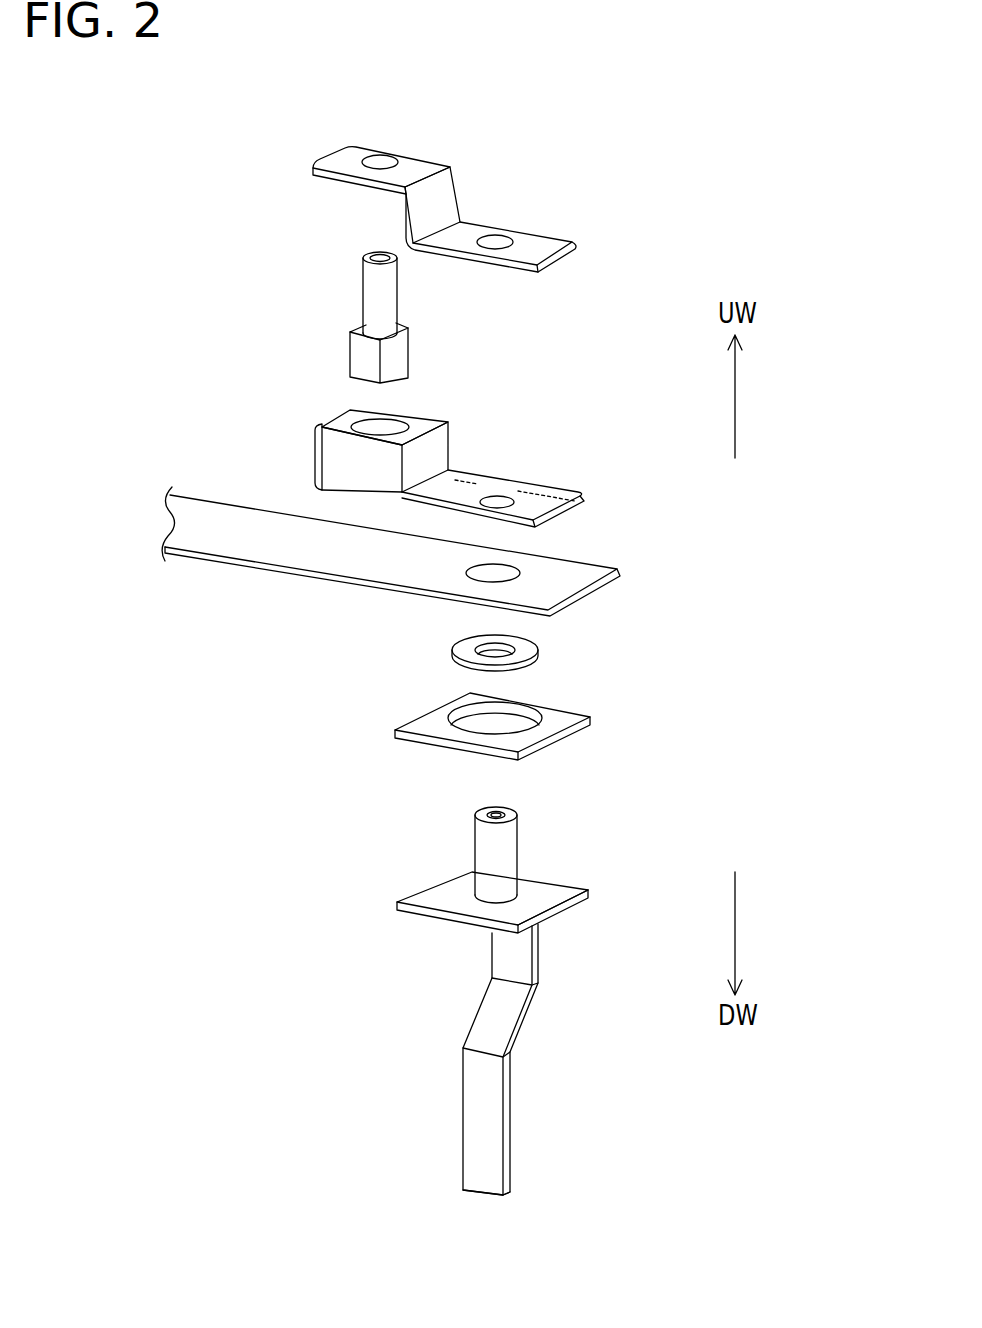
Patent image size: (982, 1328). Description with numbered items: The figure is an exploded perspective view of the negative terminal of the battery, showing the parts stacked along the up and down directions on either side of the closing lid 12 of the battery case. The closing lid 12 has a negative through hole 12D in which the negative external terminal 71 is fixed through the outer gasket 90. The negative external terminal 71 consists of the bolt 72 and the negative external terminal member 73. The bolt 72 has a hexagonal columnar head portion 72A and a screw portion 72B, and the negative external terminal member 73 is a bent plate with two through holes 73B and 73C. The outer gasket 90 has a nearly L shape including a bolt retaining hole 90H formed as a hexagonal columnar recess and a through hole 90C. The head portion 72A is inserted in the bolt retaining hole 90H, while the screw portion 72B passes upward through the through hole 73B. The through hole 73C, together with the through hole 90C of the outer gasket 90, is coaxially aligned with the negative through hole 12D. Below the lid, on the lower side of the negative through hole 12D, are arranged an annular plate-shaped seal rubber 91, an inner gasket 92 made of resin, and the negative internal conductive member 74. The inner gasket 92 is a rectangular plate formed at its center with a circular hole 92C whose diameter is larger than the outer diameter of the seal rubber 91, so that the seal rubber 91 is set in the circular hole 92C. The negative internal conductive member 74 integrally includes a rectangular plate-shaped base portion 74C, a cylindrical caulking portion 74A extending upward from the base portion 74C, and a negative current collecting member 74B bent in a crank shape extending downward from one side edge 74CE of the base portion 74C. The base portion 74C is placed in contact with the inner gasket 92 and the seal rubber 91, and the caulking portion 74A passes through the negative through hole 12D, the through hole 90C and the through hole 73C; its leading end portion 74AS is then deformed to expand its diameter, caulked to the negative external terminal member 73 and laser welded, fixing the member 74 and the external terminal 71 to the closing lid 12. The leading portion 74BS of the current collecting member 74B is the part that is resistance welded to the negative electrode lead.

The negative external terminal 71 is at (207, 183).
The bolt 72 is at (368, 287).
The hexagonal columnar head portion 72A is at (400, 357).
The screw portion 72B is at (392, 297).
The negative external terminal member 73 is at (313, 171).
The through hole 73B is at (382, 158).
The through hole 73C is at (500, 240).
The outer gasket 90 is at (316, 450).
The bolt retaining hole 90H is at (380, 432).
The through hole 90C is at (500, 503).
The closing lid 12 is at (566, 584).
The negative through hole 12D is at (505, 568).
The seal rubber 91 is at (452, 645).
The inner gasket 92 is at (422, 718).
The circular hole 92C is at (538, 707).
The negative internal conductive member 74 is at (288, 887).
The caulking portion 74A is at (485, 853).
The leading end portion 74AS is at (517, 813).
The plate-shaped base portion 74C is at (447, 904).
The side edge 74CE is at (553, 881).
The negative current collecting member 74B is at (470, 1070).
The leading portion 74BS is at (467, 1160).